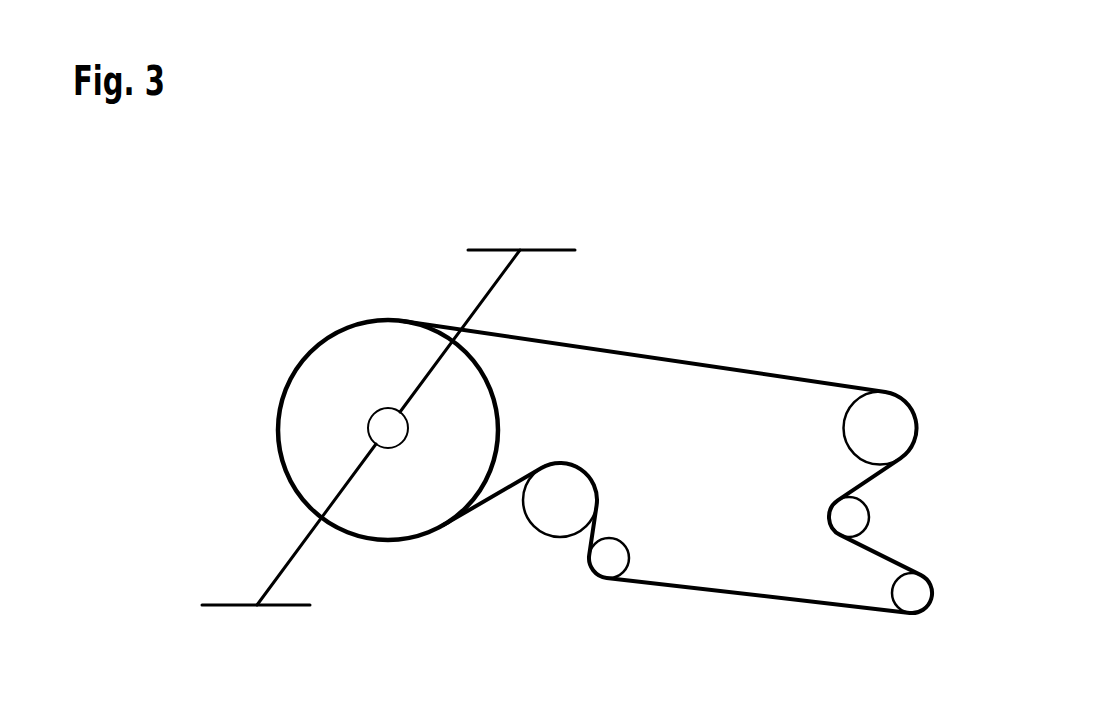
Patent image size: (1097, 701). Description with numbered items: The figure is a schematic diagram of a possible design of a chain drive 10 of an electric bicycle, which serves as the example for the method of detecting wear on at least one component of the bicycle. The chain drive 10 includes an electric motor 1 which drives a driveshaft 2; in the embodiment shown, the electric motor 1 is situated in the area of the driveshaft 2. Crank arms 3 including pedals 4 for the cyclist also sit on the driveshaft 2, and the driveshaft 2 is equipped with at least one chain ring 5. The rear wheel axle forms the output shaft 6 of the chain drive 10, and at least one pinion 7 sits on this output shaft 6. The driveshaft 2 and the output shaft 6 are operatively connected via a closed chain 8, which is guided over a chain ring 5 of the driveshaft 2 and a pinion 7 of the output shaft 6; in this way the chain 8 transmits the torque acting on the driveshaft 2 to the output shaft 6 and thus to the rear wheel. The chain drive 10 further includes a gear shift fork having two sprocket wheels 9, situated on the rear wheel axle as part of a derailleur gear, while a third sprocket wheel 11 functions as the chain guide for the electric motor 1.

The electric motor 1 is at (522, 553).
The driveshaft 2 is at (390, 428).
The crank arms 3 is at (497, 290).
The pedals 4 is at (587, 236).
The chain ring 5 is at (310, 393).
The output shaft 6 is at (897, 430).
The pinion 7 is at (921, 411).
The chain 8 is at (757, 600).
The sprocket wheels 9 is at (858, 515).
The chain drive 10 is at (987, 202).
The third sprocket wheel 11 is at (608, 565).